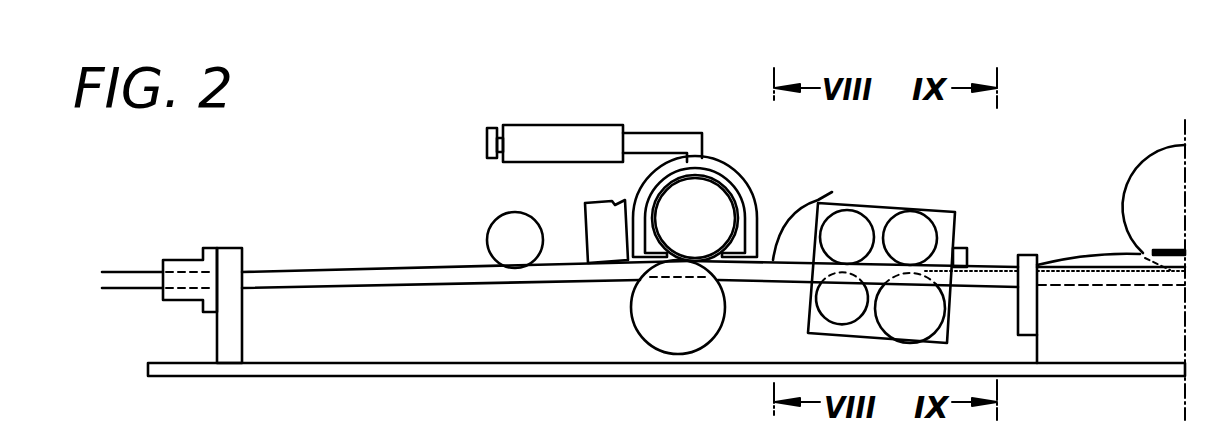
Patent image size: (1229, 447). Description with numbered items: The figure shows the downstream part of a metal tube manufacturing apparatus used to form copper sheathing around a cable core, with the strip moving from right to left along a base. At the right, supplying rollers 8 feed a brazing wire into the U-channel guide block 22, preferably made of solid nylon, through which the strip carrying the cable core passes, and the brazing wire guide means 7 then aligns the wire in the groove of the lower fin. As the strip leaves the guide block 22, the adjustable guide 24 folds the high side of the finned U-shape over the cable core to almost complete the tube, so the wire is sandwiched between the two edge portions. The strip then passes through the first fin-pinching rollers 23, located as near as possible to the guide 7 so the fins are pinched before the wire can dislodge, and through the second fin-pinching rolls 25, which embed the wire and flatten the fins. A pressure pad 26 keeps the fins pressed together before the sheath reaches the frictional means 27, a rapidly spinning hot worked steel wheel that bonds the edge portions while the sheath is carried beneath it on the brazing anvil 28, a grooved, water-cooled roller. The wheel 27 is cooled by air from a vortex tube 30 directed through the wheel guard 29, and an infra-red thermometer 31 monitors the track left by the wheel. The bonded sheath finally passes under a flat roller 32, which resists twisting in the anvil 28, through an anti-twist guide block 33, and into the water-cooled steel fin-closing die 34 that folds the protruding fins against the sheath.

The brazing wire guide means 7 is at (968, 250).
The supplying rollers 8 is at (1153, 168).
The U-channel guide block 22 is at (1138, 338).
The first fin-pinching rollers 23 is at (945, 214).
The adjustable guide 24 is at (1030, 262).
The second fin-pinching rolls 25 is at (920, 233).
The pressure pad 26 is at (852, 227).
The frictional means 27 is at (713, 213).
The brazing anvil 28 is at (665, 313).
The wheel guard 29 is at (756, 192).
The vortex tube 30 is at (540, 142).
The infra-red thermometer 31 is at (610, 210).
The flat roller 32 is at (500, 228).
The anti-twist guide block 33 is at (243, 256).
The fin-closing die 34 is at (186, 270).